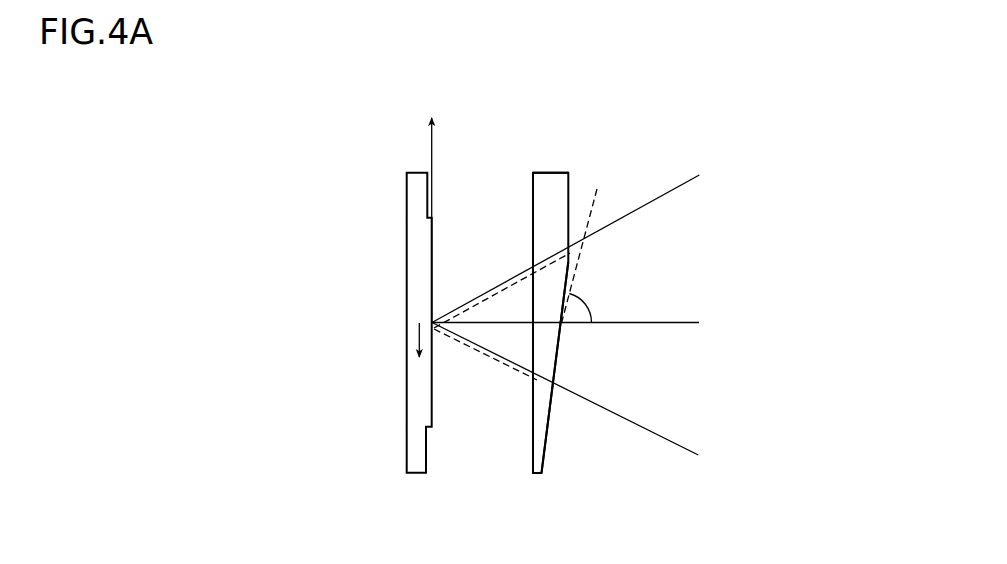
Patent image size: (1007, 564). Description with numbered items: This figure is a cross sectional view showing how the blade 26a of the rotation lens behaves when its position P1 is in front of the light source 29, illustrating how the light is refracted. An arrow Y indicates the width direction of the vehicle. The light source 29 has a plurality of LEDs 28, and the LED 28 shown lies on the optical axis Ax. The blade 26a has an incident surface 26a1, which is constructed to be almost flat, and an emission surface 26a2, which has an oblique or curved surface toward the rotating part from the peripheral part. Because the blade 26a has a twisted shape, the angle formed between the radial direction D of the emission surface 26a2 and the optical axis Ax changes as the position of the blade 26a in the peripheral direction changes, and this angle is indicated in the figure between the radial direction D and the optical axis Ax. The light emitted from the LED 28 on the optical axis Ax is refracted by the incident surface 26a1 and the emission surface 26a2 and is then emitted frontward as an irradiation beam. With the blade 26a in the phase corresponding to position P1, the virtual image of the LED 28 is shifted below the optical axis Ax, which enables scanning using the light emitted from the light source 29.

The light source 29 is at (386, 292).
The LED 28 is at (437, 307).
The blade 26a is at (540, 477).
The incident surface 26a1 is at (532, 435).
The emission surface 26a2 is at (561, 354).
The position P1 is at (553, 172).
The radial direction D is at (595, 205).
The optical axis Ax is at (673, 322).
The arrow Y is at (431, 208).